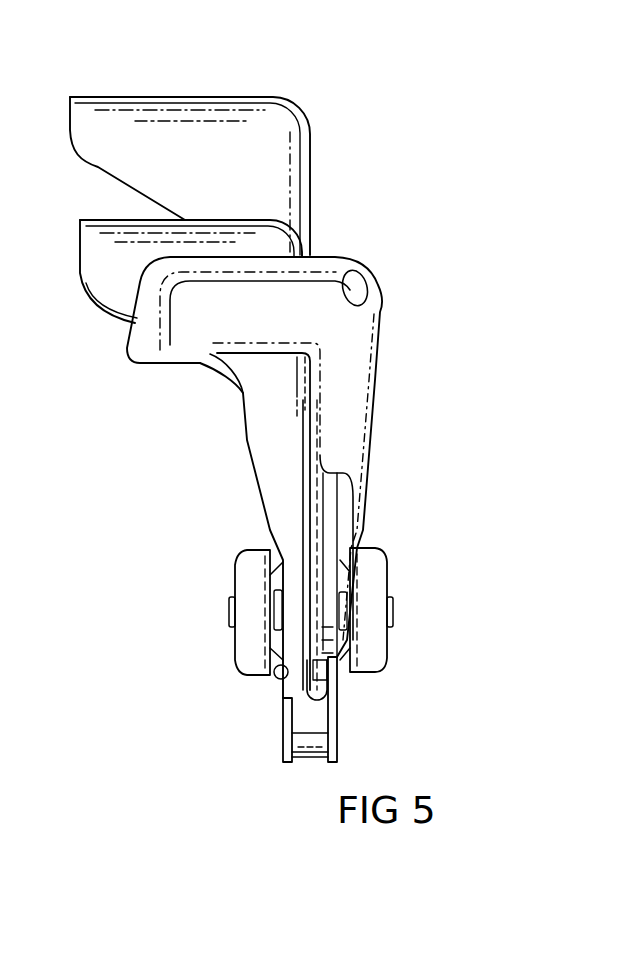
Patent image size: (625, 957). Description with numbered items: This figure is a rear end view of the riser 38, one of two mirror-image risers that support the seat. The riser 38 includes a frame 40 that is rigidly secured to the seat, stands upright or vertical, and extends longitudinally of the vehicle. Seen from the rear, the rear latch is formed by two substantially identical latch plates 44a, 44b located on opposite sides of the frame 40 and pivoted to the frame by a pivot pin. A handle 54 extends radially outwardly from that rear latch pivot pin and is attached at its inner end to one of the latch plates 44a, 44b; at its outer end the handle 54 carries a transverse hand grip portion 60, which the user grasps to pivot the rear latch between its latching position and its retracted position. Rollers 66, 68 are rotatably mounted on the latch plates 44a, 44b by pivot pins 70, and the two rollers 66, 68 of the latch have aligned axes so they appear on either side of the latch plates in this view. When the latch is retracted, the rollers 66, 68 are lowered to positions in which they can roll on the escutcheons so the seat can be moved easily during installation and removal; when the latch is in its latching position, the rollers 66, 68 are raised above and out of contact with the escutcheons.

The riser 38 is at (226, 147).
The frame 40 is at (273, 161).
The hand grip portion 60 is at (255, 268).
The handle 54 is at (385, 338).
The roller 66 is at (242, 552).
The roller 68 is at (383, 550).
The pivot pin 70 is at (392, 600).
The latch plate 44a is at (288, 722).
The latch plate 44b is at (333, 728).